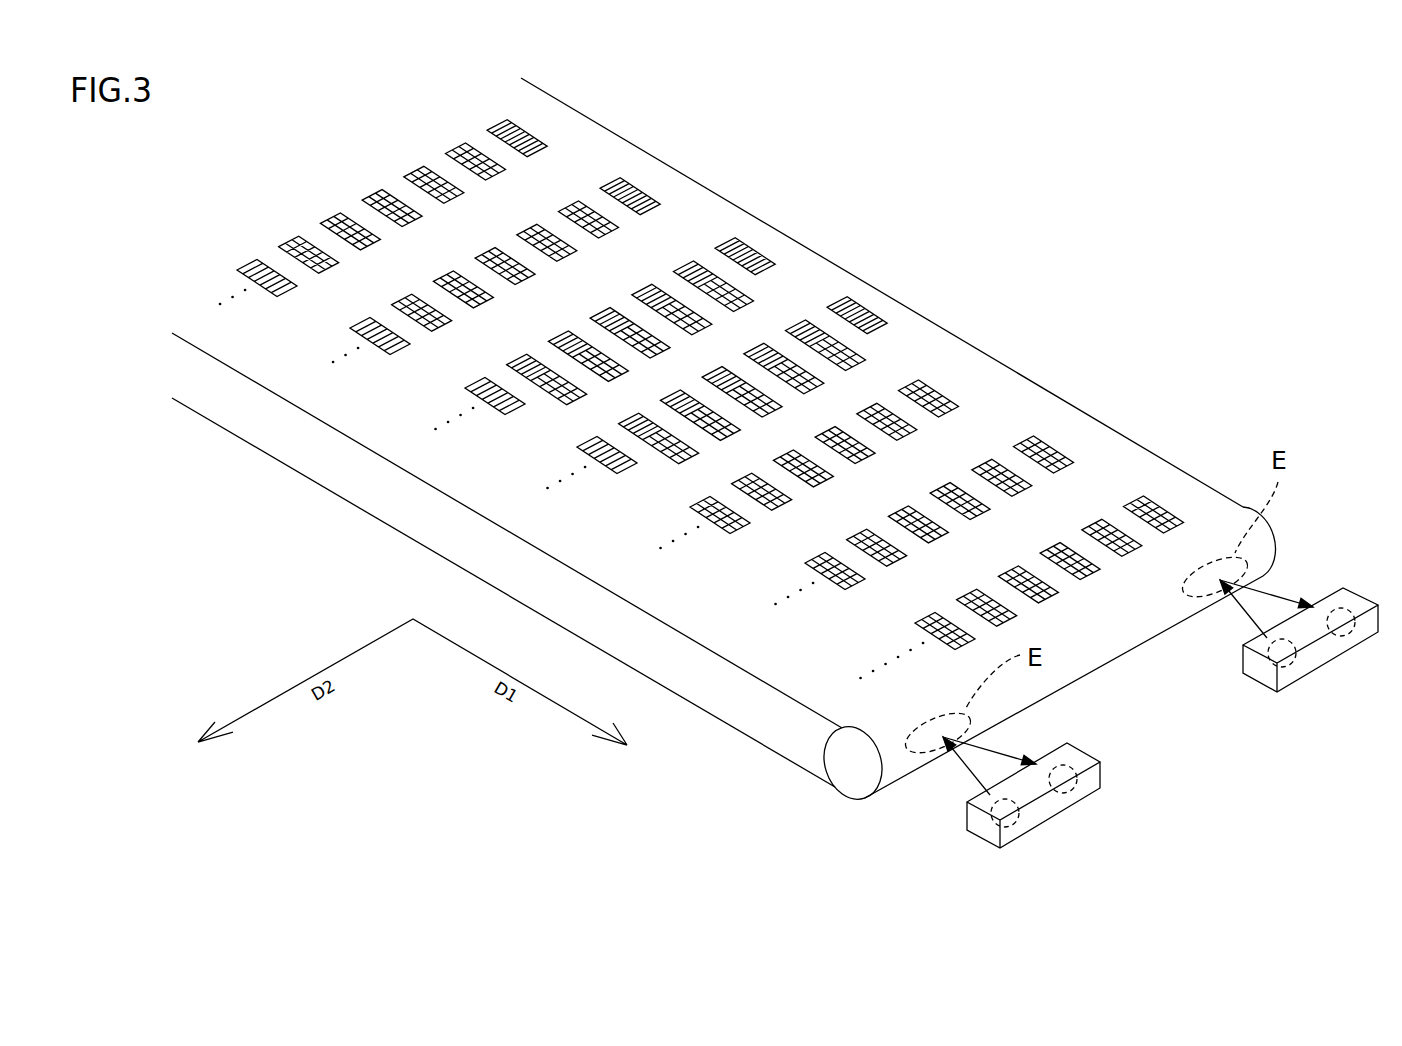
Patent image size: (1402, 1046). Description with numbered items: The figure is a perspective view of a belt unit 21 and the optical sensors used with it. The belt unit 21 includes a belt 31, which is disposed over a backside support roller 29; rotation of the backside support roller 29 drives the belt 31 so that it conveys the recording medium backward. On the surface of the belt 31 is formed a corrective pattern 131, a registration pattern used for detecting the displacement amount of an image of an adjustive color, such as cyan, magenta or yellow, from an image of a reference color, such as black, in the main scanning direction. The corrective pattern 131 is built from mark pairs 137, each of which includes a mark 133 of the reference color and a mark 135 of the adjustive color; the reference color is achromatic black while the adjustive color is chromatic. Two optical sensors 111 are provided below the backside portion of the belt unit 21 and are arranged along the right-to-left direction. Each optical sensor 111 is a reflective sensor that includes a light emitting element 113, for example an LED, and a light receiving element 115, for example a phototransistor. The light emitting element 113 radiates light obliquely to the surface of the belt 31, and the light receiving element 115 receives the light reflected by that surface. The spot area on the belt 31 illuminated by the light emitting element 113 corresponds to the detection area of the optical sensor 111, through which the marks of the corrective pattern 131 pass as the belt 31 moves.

The belt unit 21 is at (1112, 350).
The backside support roller 29 is at (860, 783).
The belt 31 is at (1198, 493).
The optical sensor 111 is at (1345, 600).
The light emitting element 113 is at (1286, 668).
The light receiving element 115 is at (1352, 638).
The corrective pattern 131 is at (702, 399).
The mark of a reference color 133 is at (840, 322).
The mark of an adjustive color 135 is at (812, 334).
The mark pair 137 is at (850, 255).